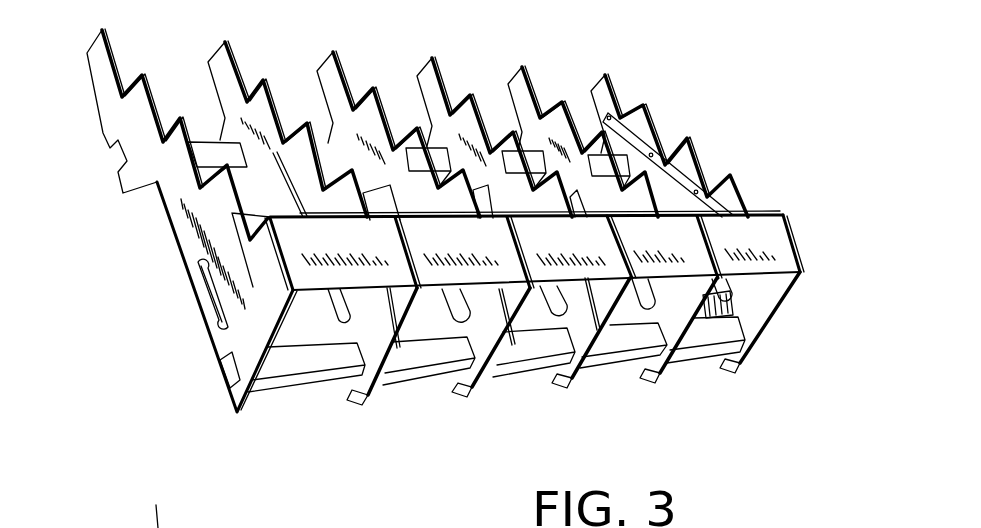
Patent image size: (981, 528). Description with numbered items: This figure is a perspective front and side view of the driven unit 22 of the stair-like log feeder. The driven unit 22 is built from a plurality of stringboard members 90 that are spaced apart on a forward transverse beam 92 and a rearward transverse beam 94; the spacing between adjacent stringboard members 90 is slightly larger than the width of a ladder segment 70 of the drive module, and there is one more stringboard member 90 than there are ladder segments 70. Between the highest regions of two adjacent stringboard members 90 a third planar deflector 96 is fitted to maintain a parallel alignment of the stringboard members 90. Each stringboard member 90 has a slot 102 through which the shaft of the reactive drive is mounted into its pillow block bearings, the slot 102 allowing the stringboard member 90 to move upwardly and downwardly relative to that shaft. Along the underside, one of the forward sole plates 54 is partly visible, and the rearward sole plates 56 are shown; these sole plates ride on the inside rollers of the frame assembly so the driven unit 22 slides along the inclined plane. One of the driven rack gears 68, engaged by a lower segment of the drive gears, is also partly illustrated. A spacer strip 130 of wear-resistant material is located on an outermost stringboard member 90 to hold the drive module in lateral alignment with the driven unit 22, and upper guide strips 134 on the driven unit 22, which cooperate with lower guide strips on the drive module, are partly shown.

The driven unit 22 is at (725, 411).
The forward sole plate 54 is at (211, 132).
The rearward sole plate 56 is at (347, 403).
The driven rack gear 68 is at (732, 305).
The ladder segment 70 is at (155, 498).
The stringboard member 90 is at (120, 118).
The forward transverse beam 92 is at (208, 152).
The rearward transverse beam 94 is at (293, 383).
The third planar deflector 96 is at (760, 233).
The slot 102 is at (213, 302).
The spacer strip 130 is at (675, 175).
The upper guide strip 134 is at (292, 145).